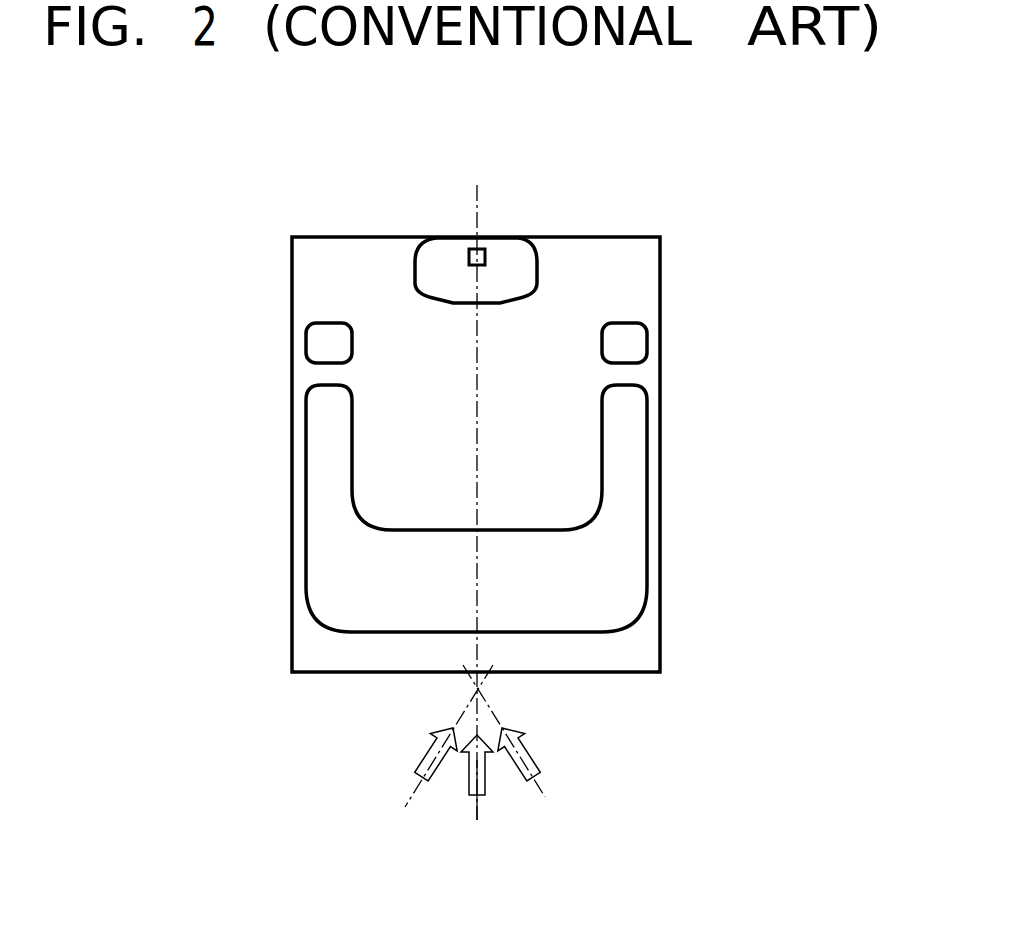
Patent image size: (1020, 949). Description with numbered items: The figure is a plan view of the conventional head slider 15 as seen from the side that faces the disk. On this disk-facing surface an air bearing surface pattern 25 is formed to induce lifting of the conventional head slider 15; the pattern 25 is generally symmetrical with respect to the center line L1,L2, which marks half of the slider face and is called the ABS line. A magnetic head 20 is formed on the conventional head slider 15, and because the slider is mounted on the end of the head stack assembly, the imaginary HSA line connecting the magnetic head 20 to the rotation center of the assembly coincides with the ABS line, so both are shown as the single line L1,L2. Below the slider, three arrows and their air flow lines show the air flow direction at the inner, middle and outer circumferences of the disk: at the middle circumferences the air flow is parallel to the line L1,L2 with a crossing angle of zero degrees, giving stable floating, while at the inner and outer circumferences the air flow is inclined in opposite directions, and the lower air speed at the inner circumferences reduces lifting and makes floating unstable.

The conventional head slider 15 is at (266, 261).
The magnetic head 20 is at (467, 257).
The air bearing surface (ABS) pattern 25 is at (630, 343).
The ABS line and HSA line L1,L2 is at (478, 215).